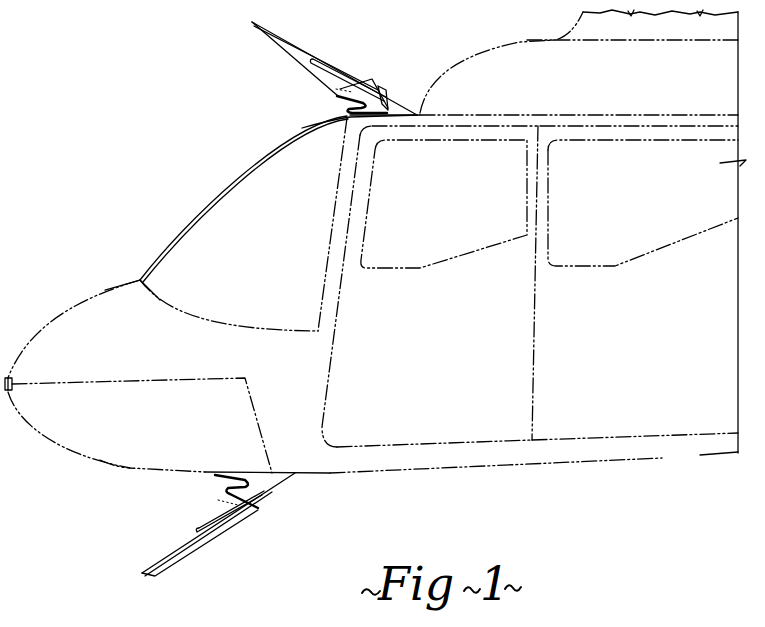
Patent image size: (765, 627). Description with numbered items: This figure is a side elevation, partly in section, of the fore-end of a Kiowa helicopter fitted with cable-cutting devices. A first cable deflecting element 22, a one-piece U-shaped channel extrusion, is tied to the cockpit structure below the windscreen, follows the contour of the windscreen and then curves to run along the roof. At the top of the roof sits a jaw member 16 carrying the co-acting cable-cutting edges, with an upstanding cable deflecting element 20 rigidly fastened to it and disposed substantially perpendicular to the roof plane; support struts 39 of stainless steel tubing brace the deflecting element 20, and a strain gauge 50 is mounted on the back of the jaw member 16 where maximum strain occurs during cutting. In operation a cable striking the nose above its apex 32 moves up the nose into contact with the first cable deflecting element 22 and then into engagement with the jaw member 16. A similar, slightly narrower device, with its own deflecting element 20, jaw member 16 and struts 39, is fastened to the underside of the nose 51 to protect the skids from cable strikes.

The jaw member 16 is at (337, 97).
The cable deflecting element 20 is at (283, 40).
The cable deflecting element 22 is at (192, 214).
The apex 32 is at (12, 372).
The support struts 39 is at (329, 62).
The strain gauge 50 is at (388, 92).
The nose 51 is at (132, 470).